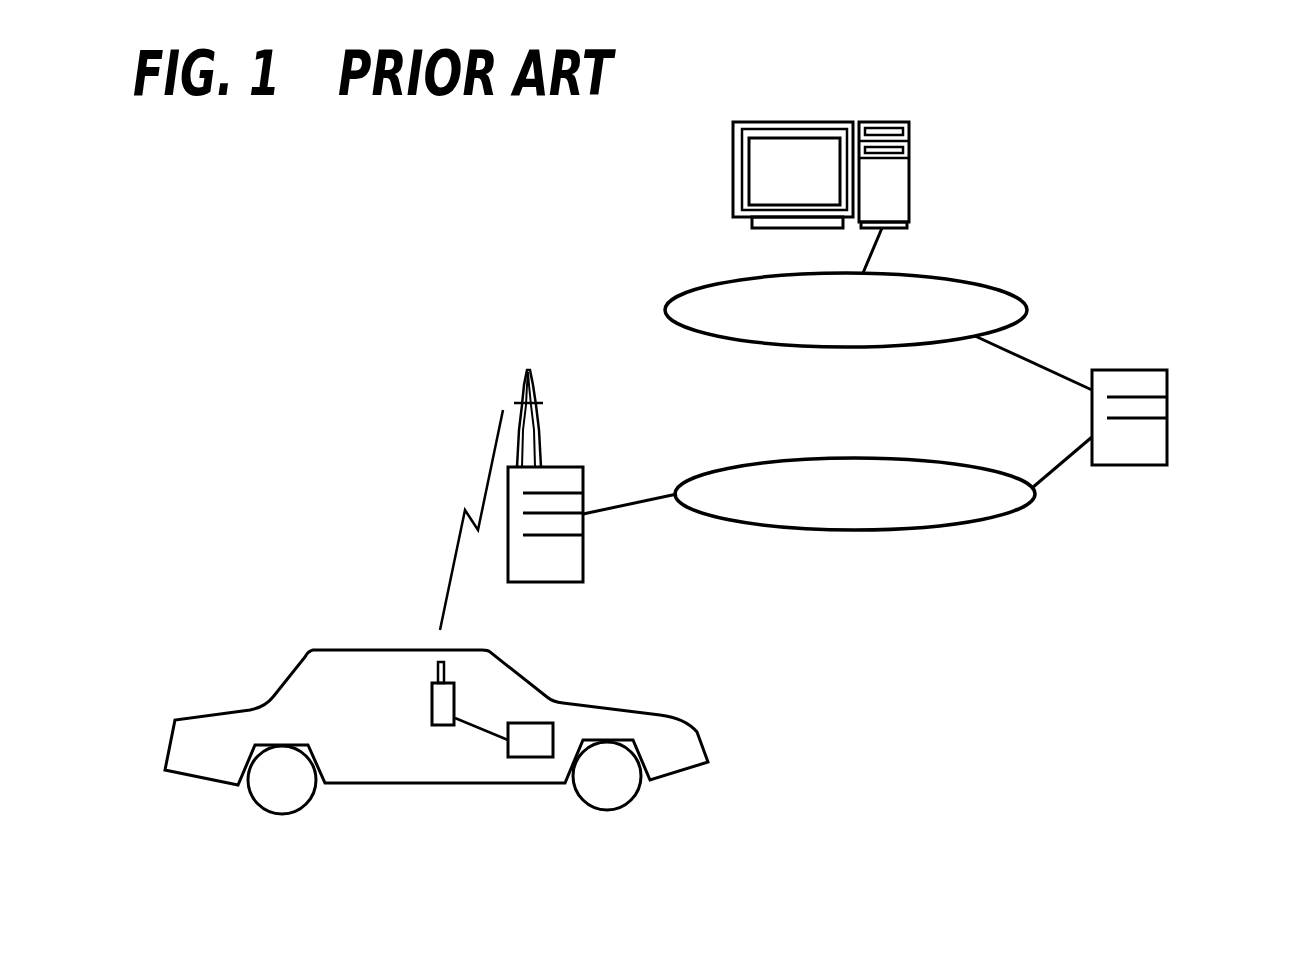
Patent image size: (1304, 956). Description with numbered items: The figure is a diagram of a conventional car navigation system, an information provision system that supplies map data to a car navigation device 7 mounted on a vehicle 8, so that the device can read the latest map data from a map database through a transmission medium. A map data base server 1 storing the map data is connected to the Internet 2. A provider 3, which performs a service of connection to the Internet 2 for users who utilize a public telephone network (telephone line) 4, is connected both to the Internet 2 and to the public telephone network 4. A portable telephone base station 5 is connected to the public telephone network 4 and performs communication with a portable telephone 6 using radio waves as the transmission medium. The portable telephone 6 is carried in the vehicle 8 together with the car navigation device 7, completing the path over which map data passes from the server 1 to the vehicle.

The map data base server 1 is at (740, 122).
The Internet 2 is at (671, 300).
The provider 3 is at (1096, 370).
The public telephone network (telephone line) 4 is at (851, 530).
The portable telephone base station 5 is at (554, 465).
The portable telephone 6 is at (443, 703).
The car navigation device 7 is at (537, 730).
The vehicle 8 is at (402, 771).